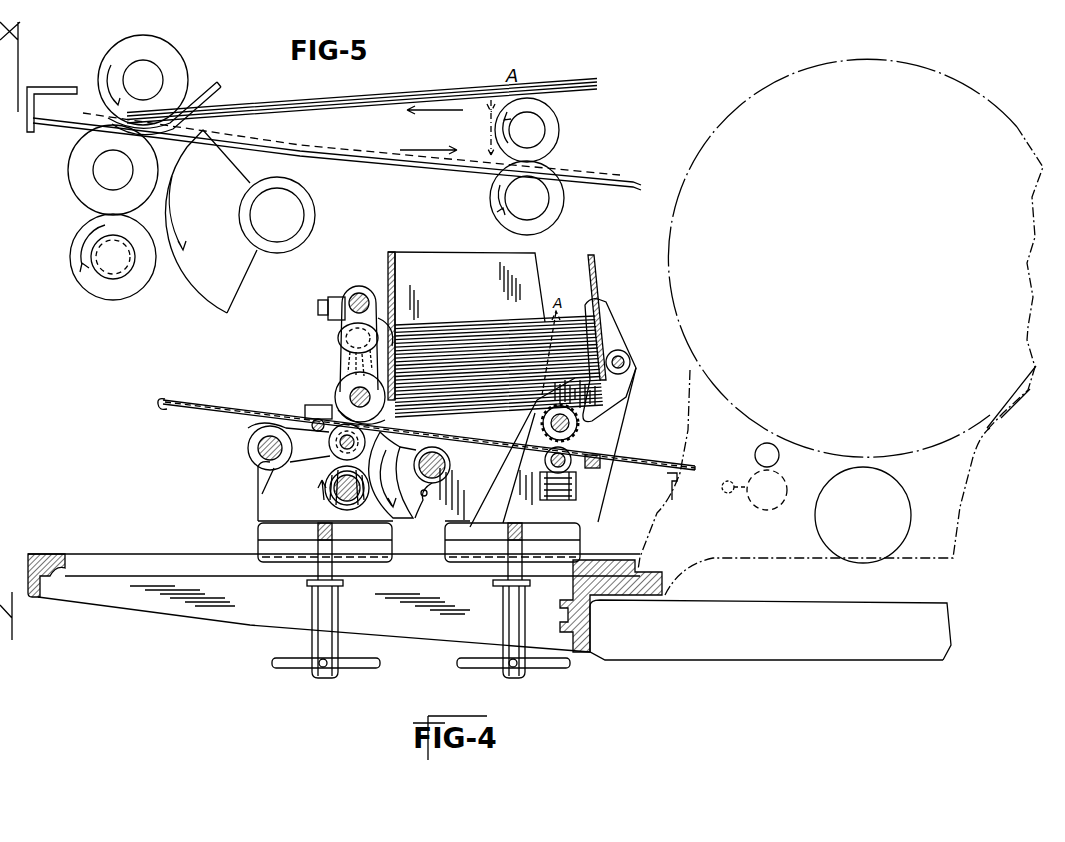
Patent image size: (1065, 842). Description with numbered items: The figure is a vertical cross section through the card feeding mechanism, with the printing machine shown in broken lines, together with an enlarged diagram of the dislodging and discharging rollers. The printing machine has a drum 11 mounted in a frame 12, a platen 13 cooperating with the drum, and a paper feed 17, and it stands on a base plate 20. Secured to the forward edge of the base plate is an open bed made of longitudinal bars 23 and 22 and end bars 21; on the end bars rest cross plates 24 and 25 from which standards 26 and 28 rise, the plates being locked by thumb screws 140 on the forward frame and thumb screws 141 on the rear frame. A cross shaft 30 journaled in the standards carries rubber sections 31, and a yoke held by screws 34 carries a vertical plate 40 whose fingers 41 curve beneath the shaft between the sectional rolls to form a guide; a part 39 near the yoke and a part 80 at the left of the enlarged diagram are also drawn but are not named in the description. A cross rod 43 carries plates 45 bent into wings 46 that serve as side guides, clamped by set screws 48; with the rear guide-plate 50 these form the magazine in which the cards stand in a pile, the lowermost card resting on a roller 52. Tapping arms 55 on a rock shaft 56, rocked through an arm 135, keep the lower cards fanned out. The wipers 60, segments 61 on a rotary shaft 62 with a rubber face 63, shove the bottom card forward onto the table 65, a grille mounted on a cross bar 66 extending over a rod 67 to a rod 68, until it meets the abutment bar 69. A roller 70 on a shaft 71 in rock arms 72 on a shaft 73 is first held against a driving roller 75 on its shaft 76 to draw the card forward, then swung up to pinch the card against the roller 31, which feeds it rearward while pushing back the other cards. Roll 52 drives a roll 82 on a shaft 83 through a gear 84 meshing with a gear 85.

In FIG. 4, the drum 11 is at (996, 416).
In FIG. 4, the frame 12 is at (814, 482).
In FIG. 4, the platen 13 is at (911, 506).
In FIG. 4, the paper feed 17 is at (791, 462).
In FIG. 4, the arm 135 is at (748, 482).
In FIG. 4, the base plate 20 is at (770, 630).
In FIG. 4, the end bars 21 is at (485, 607).
In FIG. 4, the longitudinal bar 22 is at (60, 554).
In FIG. 4, the longitudinal bar 23 is at (590, 600).
In FIG. 4, the cross plate 24 is at (262, 546).
In FIG. 4, the cross plate 25 is at (581, 548).
In FIG. 4, the standard 26 is at (364, 491).
In FIG. 4, the standard 28 is at (517, 452).
In FIG. 4, the cross shaft 30 is at (360, 386).
In FIG. 5, the rubber or elastic sections 31 is at (171, 66).
In FIG. 4, the rubber or elastic sections 31 is at (348, 384).
In FIG. 4, the screws 34 is at (382, 326).
In FIG. 4, the shaft 39 is at (341, 295).
In FIG. 4, the vertical plate 40 is at (389, 255).
In FIG. 5, the fingers 41 is at (221, 88).
In FIG. 4, the fingers 41 is at (380, 392).
In FIG. 4, the cross rod 43 is at (359, 291).
In FIG. 4, the plates 45 is at (393, 296).
In FIG. 4, the wings 46 is at (495, 334).
In FIG. 4, the set screws 48 is at (325, 312).
In FIG. 4, the guide-plate 50 is at (597, 262).
In FIG. 5, the roller 52 is at (559, 132).
In FIG. 4, the roller 52 is at (545, 425).
In FIG. 4, the tapping arms 55 is at (622, 414).
In FIG. 4, the rock shaft 56 is at (629, 358).
In FIG. 5, the wipers 60 is at (211, 221).
In FIG. 4, the wipers 60 is at (391, 475).
In FIG. 4, the segments 61 is at (432, 490).
In FIG. 5, the rotary shaft 62 is at (277, 215).
In FIG. 4, the rotary shaft 62 is at (450, 464).
In FIG. 4, the rubber face 63 is at (418, 512).
In FIG. 5, the table 65 is at (391, 157).
In FIG. 4, the cross bar 66 is at (590, 469).
In FIG. 4, the rod 67 is at (250, 427).
In FIG. 4, the rod 68 is at (426, 434).
In FIG. 4, the abutment bar 69 is at (306, 406).
In FIG. 5, the roller 70 is at (125, 180).
In FIG. 4, the roller 70 is at (330, 446).
In FIG. 4, the shaft 71 is at (340, 457).
In FIG. 4, the rock arms 72 is at (268, 478).
In FIG. 4, the shaft 73 is at (258, 450).
In FIG. 5, the driving roller 75 is at (123, 261).
In FIG. 4, the driving roller 75 is at (360, 502).
In FIG. 5, the shaft 76 is at (104, 283).
In FIG. 4, the shaft 76 is at (323, 498).
In FIG. 5, the guide 80 is at (50, 87).
In FIG. 5, the roll 82 is at (563, 200).
In FIG. 4, the roll 82 is at (556, 495).
In FIG. 4, the shaft 83 is at (576, 488).
In FIG. 4, the gear 84 is at (517, 478).
In FIG. 4, the gear 85 is at (530, 488).
In FIG. 4, the thumb screws 140 is at (338, 606).
In FIG. 4, the thumb screws 141 is at (525, 604).